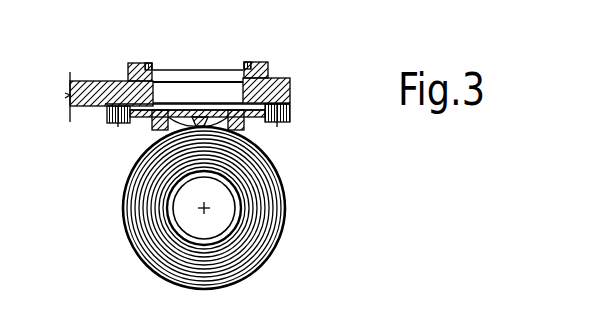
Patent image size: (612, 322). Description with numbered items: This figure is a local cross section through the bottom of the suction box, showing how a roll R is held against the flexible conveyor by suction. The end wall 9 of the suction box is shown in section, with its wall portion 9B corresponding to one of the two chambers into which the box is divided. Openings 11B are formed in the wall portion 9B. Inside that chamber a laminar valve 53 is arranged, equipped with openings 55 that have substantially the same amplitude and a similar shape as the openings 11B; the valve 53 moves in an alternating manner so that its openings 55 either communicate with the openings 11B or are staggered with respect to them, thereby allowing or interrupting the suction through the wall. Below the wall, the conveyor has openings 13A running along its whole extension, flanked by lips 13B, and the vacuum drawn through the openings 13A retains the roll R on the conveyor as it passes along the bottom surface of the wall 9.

The end wall of the suction box 9 is at (88, 117).
The wall portion 9B is at (93, 81).
The laminar valve 53 is at (157, 73).
The openings 55 is at (207, 76).
The openings 11B is at (223, 92).
The openings 13A is at (245, 130).
The lips 13B is at (152, 128).
The roll R is at (143, 249).